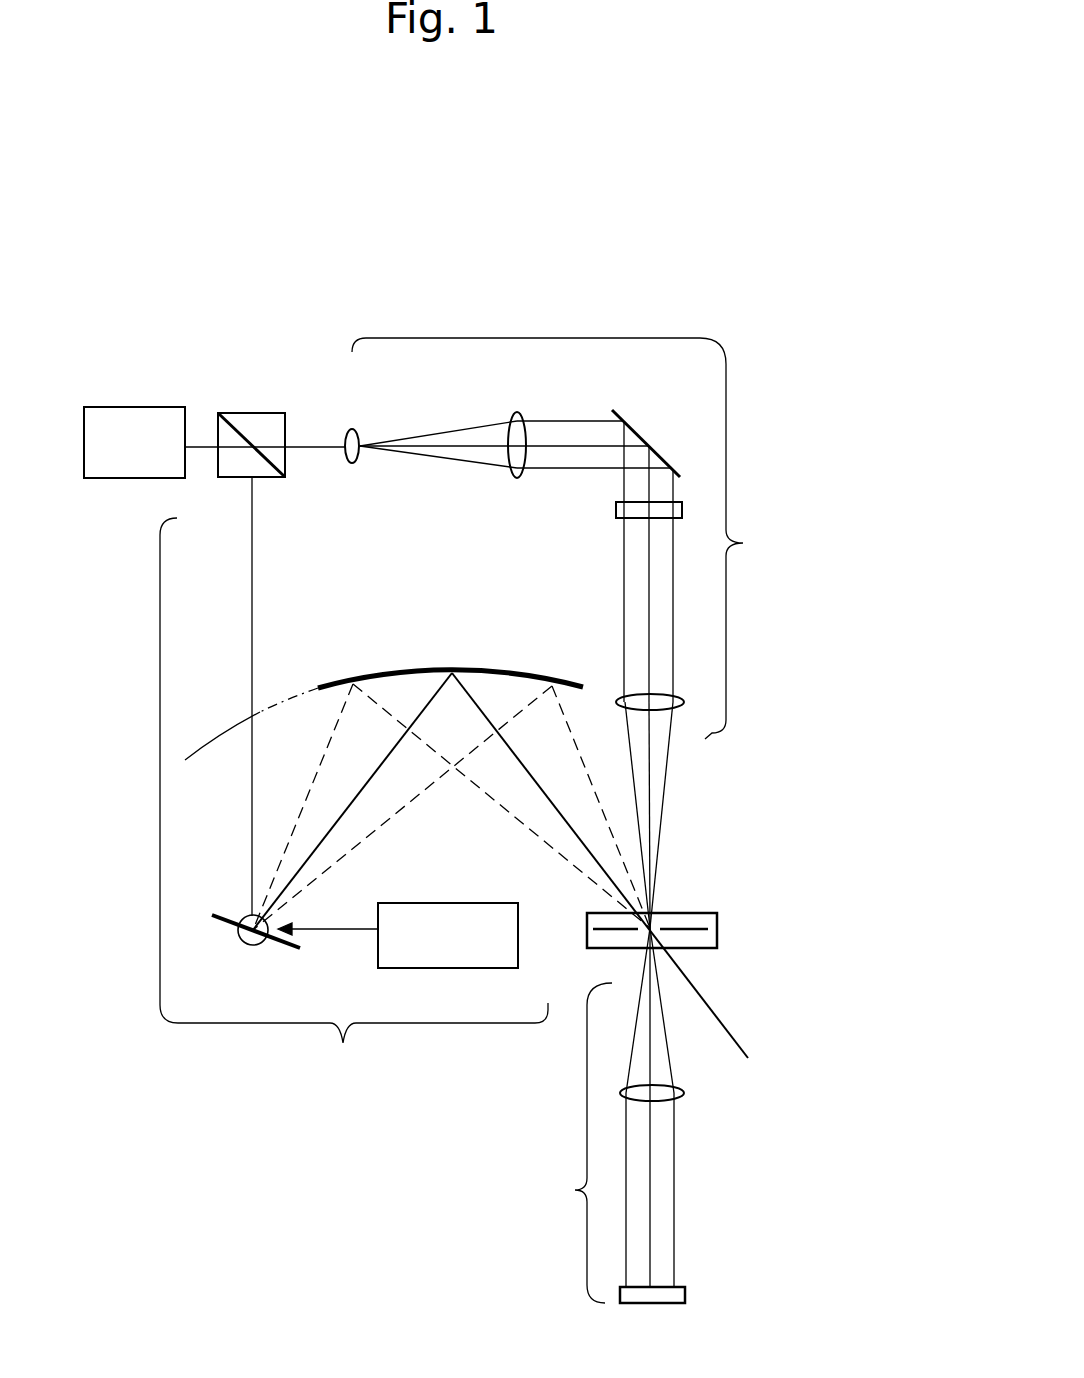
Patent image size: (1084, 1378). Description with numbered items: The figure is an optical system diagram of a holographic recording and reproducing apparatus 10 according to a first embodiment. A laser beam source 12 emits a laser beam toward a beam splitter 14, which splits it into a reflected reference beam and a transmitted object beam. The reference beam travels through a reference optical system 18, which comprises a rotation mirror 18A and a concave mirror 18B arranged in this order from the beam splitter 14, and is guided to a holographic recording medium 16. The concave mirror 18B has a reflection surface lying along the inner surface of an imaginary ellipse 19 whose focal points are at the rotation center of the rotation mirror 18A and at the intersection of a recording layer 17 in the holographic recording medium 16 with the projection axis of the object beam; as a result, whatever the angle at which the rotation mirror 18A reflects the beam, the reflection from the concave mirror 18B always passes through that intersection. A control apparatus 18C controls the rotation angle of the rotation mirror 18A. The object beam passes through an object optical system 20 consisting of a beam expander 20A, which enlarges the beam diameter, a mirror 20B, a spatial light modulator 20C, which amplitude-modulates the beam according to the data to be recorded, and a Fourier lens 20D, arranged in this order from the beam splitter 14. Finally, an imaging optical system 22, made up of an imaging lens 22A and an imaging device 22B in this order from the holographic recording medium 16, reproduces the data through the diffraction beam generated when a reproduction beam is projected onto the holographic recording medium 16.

The holographic recording and reproducing apparatus 10 is at (309, 320).
The laser beam source 12 is at (156, 407).
The beam splitter 14 is at (251, 398).
The holographic recording medium 16 is at (690, 913).
The recording layer 17 is at (708, 928).
The reference optical system 18 is at (454, 799).
The rotation mirror 18A is at (283, 950).
The concave mirror 18B is at (412, 668).
The control apparatus 18C is at (462, 903).
The imaginary ellipse 19 is at (295, 692).
The object optical system 20 is at (565, 538).
The beam expander 20A is at (517, 409).
The mirror 20B is at (614, 409).
The spatial light modulator 20C is at (616, 510).
The Fourier lens 20D is at (620, 697).
The imaging optical system 22 is at (575, 1190).
The imaging lens 22A is at (684, 1092).
The imaging device 22B is at (685, 1289).